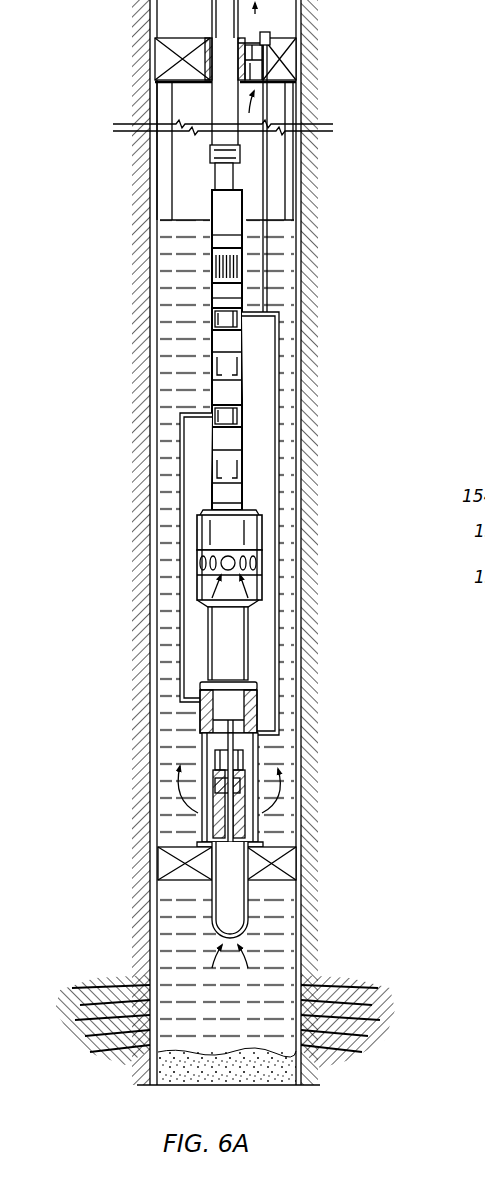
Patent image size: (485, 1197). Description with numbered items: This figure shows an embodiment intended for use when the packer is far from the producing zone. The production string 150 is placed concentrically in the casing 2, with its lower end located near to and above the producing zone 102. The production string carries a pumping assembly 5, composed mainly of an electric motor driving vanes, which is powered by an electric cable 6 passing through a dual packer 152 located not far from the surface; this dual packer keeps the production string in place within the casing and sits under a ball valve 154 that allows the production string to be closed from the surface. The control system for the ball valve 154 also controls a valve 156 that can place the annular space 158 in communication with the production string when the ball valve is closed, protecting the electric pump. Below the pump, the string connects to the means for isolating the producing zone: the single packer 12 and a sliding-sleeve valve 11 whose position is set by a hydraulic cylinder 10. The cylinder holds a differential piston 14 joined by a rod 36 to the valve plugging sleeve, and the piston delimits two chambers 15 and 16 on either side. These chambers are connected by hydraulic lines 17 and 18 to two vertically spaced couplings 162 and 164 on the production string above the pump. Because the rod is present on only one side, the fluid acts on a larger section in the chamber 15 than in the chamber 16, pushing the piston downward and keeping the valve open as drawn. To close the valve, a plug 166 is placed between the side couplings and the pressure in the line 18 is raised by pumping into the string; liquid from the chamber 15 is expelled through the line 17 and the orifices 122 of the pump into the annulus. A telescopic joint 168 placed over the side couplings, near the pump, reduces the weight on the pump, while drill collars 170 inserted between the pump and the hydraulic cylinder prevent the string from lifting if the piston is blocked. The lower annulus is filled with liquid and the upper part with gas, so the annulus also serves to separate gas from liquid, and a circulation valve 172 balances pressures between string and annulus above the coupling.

The casing 2 is at (152, 357).
The pumping assembly 5 is at (203, 522).
The electric cable 6 is at (267, 190).
The hydraulic cylinder 10 is at (212, 705).
The sliding-sleeve valve 11 is at (262, 790).
The single packer 12 is at (273, 873).
The piston 14 is at (215, 725).
The chamber 15 is at (228, 700).
The chamber 16 is at (210, 758).
The hydraulic line 17 is at (183, 583).
The hydraulic line 18 is at (280, 615).
The rod 36 is at (258, 768).
The producing zone 102 is at (137, 965).
The orifices 122 is at (207, 546).
The production string 150 is at (205, 292).
The dual packer 152 is at (163, 60).
The ball valve 154 is at (210, 25).
The valve 156 is at (205, 5).
The annular space 158 is at (168, 95).
The coupling 162 is at (243, 418).
The coupling 164 is at (212, 320).
The plug 166 is at (212, 368).
The telescopic joint 168 is at (240, 202).
The drill collars 170 is at (222, 648).
The sliding-sleeve valve 172 is at (244, 272).